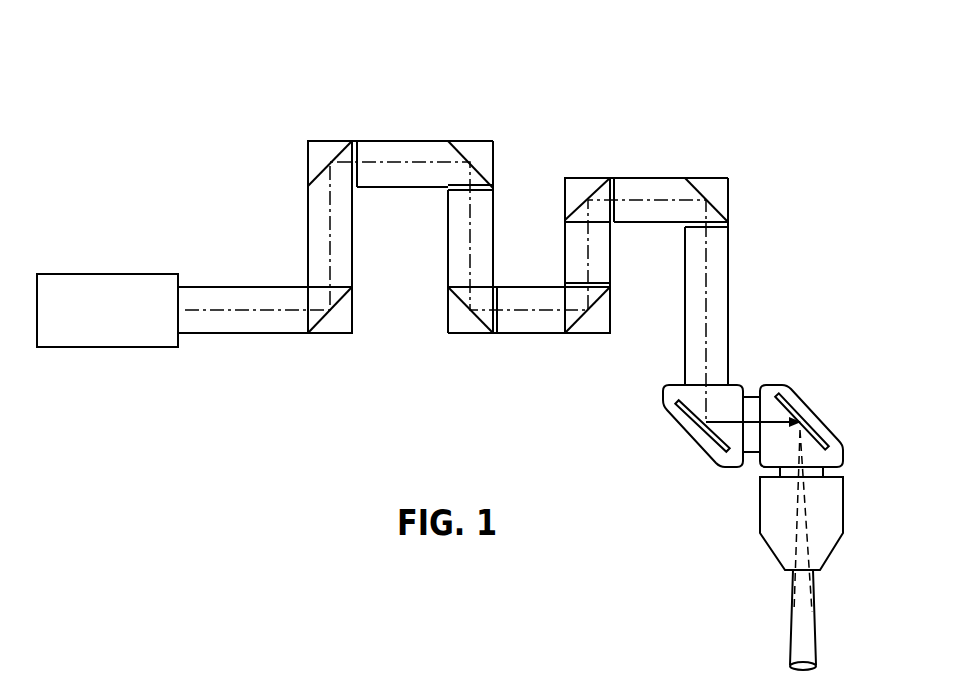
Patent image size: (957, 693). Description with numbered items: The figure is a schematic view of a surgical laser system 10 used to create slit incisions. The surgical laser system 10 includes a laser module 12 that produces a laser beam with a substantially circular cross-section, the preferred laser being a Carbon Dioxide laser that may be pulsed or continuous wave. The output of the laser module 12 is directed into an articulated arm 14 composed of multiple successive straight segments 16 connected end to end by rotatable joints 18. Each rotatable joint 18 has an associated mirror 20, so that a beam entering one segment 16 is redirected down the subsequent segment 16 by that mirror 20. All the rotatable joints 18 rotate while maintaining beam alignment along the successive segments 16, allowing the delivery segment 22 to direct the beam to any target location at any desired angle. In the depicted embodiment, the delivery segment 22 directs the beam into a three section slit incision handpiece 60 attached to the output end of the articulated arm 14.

The surgical laser system 10 is at (497, 390).
The laser module 12 is at (107, 274).
The articulated arm 14 is at (587, 107).
The straight segments 16 is at (250, 334).
The rotatable joints 18 is at (356, 157).
The mirror 20 is at (330, 150).
The delivery segment 22 is at (728, 333).
The slit incision handpiece 60 is at (817, 413).